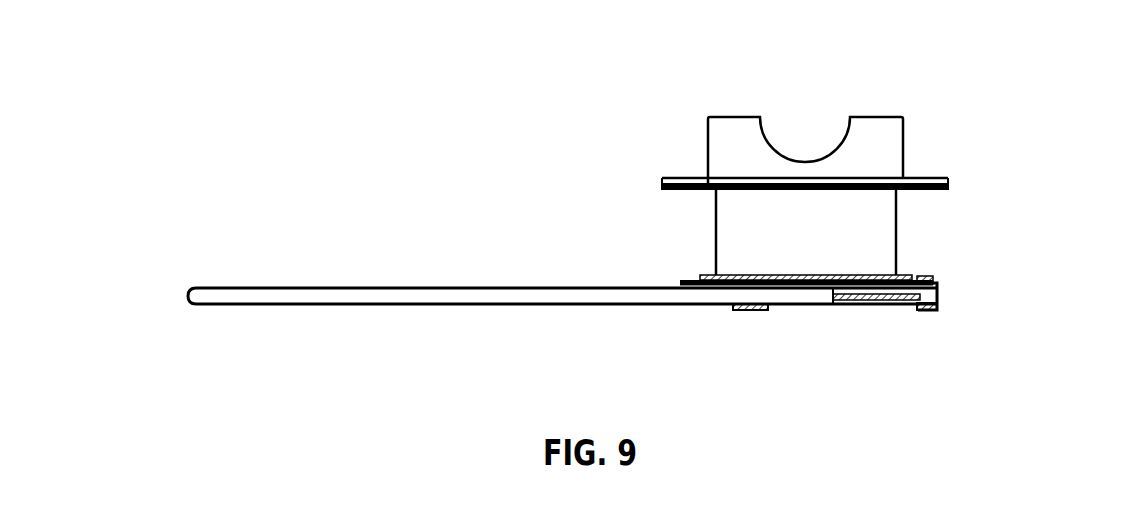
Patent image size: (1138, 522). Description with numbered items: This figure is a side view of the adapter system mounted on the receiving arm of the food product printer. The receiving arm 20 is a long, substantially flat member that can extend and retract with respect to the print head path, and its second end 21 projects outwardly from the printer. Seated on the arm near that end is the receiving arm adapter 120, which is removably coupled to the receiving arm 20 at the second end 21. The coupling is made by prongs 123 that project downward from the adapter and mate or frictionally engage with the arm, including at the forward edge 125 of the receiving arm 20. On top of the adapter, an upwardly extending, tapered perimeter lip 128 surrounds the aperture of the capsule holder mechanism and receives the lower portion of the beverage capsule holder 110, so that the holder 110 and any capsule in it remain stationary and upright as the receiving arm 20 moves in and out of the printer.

The receiving arm 20 is at (398, 278).
The second end 21 is at (866, 313).
The beverage capsule holder 110 is at (927, 98).
The receiving arm adapter 120 is at (927, 277).
The prongs 123 is at (744, 322).
The forward edge 125 is at (950, 291).
The perimeter lip 128 is at (900, 275).